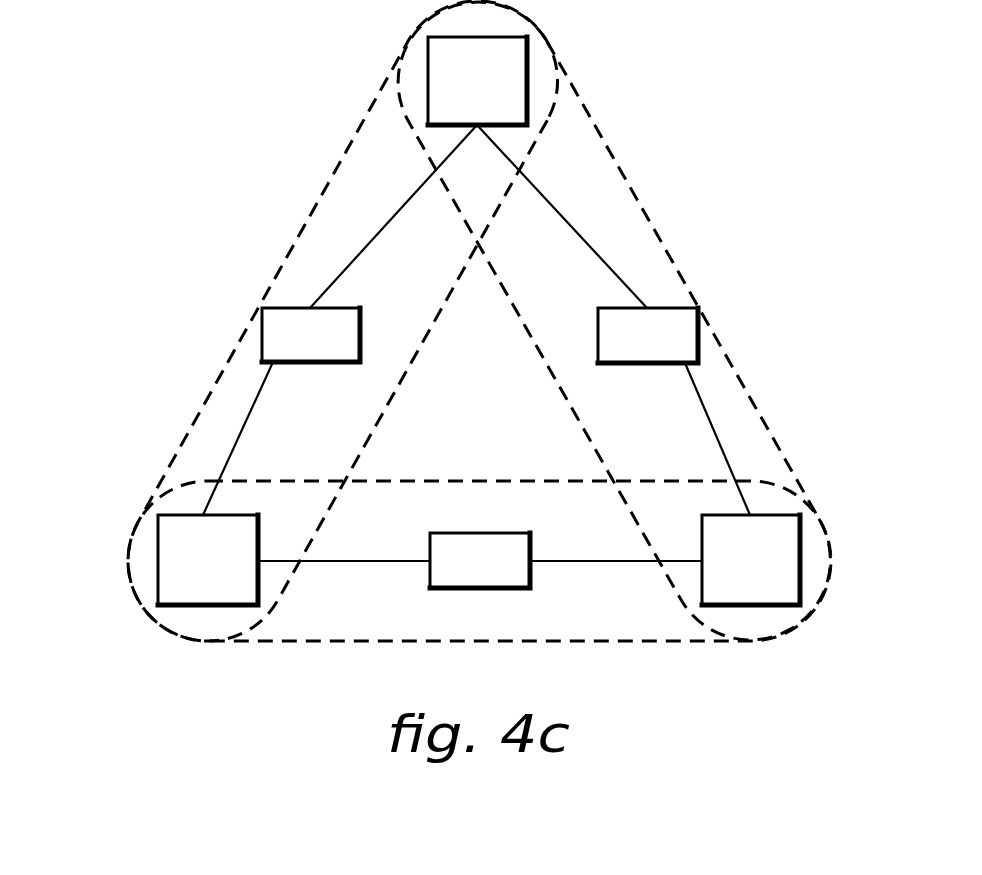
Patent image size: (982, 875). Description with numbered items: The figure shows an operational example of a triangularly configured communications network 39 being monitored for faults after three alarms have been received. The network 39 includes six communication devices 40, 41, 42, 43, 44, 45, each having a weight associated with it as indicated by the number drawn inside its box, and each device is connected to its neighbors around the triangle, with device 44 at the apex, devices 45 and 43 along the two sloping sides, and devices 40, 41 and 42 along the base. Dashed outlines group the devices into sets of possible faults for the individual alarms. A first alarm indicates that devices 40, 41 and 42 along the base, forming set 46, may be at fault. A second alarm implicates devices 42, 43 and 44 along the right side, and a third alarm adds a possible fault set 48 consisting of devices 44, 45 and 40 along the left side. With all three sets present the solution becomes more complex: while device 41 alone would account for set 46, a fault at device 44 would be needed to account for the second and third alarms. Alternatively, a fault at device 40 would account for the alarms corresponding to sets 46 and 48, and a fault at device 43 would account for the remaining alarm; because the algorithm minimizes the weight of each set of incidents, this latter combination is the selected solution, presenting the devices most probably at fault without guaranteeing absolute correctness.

The communications network 39 is at (742, 183).
The communication device 40 is at (158, 563).
The communication device 41 is at (505, 590).
The communication device 42 is at (800, 553).
The communication device 43 is at (698, 340).
The communication device 44 is at (527, 82).
The communication device 45 is at (262, 333).
The set of possible faults 46 is at (479, 481).
The possible fault set 48 is at (325, 180).